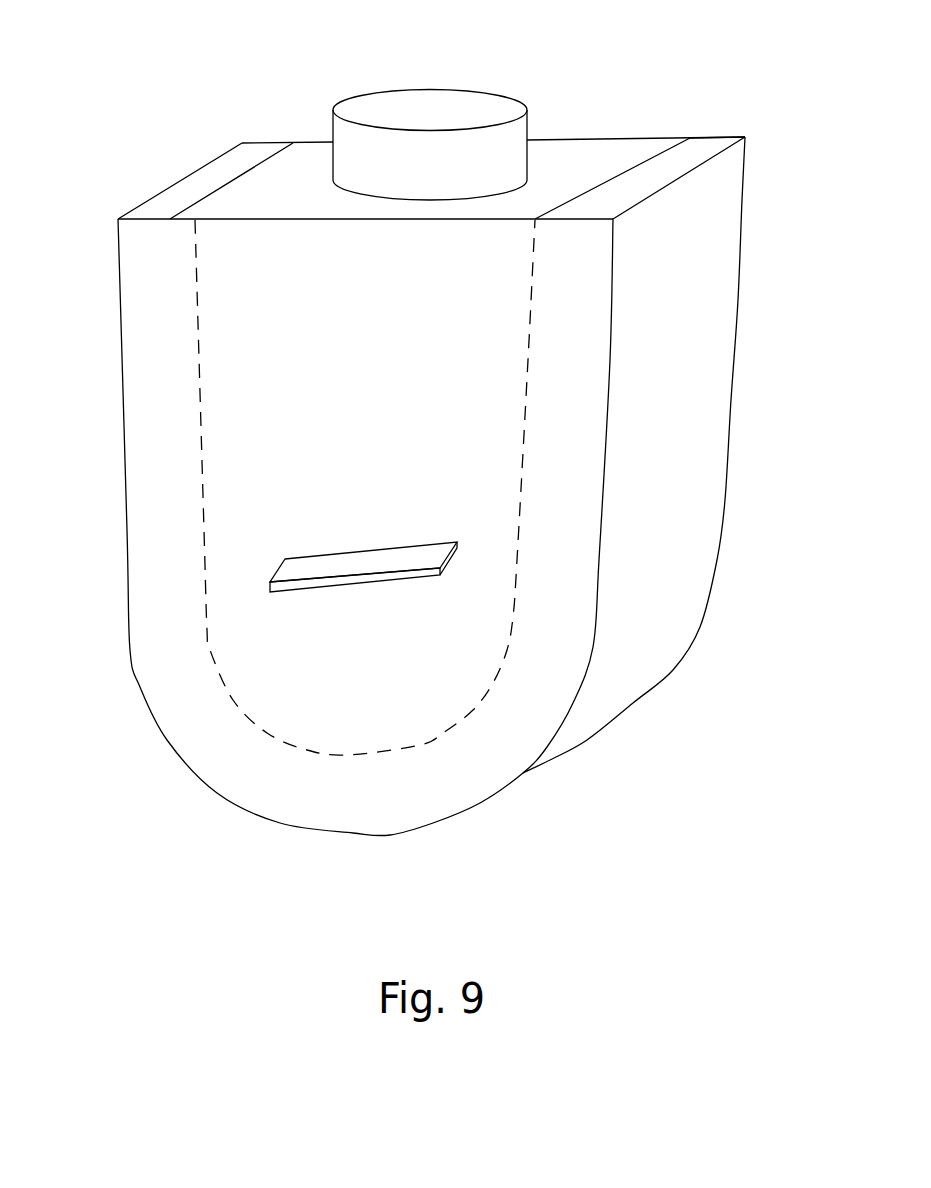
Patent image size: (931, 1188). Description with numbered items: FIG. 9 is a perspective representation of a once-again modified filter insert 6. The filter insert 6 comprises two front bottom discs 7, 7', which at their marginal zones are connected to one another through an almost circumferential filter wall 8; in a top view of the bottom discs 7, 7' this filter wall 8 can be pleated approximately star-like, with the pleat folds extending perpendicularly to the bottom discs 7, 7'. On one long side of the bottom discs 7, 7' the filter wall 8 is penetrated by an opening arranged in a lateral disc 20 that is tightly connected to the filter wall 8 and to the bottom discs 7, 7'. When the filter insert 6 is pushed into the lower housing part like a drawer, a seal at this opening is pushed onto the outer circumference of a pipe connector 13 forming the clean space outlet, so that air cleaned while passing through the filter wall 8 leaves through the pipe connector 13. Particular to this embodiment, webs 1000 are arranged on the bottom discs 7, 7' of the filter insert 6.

The filter insert 6 is at (146, 471).
The bottom disc 7 is at (365, 487).
The bottom disc 7' is at (717, 75).
The filter wall 8 is at (677, 455).
The pipe connector 13 is at (532, 128).
The lateral disc 20 is at (305, 157).
The web 1000 is at (343, 590).